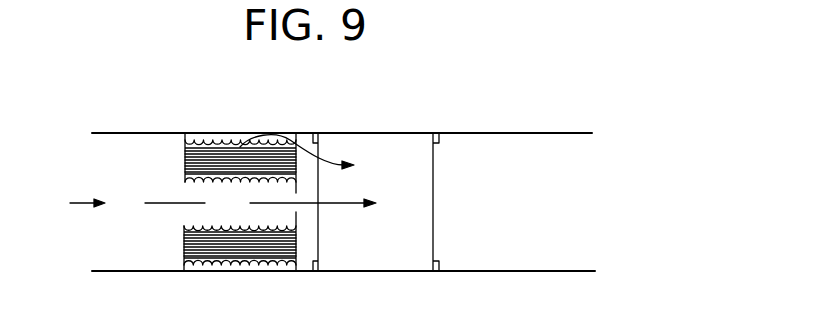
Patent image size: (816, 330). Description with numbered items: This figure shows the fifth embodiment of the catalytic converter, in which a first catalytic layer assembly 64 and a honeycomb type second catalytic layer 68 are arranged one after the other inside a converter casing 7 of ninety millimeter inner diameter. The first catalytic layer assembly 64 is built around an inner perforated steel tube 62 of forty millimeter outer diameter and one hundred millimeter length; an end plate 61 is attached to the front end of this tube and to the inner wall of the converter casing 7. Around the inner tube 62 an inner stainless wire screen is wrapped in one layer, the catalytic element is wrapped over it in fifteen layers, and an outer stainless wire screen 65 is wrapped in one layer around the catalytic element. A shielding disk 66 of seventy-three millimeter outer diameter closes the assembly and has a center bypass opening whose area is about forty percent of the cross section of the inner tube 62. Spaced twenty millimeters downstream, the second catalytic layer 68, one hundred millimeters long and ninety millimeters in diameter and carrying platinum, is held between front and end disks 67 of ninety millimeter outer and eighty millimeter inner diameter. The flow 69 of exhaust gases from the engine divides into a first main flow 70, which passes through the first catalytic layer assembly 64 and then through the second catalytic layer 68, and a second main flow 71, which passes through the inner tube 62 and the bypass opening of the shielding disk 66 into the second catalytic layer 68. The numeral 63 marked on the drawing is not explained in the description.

The converter casing 7 is at (137, 133).
The end plate 61 is at (185, 136).
The inner perforated steel tube 62 is at (200, 227).
The heat exchange core (fins) 63 is at (212, 286).
The first catalytic layer assembly 64 is at (188, 203).
The outer stainless wire screen 65 is at (275, 143).
The shielding disk 66 is at (297, 188).
The front and end disks 67 is at (310, 273).
The second catalytic layer 68 is at (405, 160).
The flow of exhaust gases 69 is at (69, 202).
The first main flow 70 is at (312, 155).
The second main flow 71 is at (278, 204).